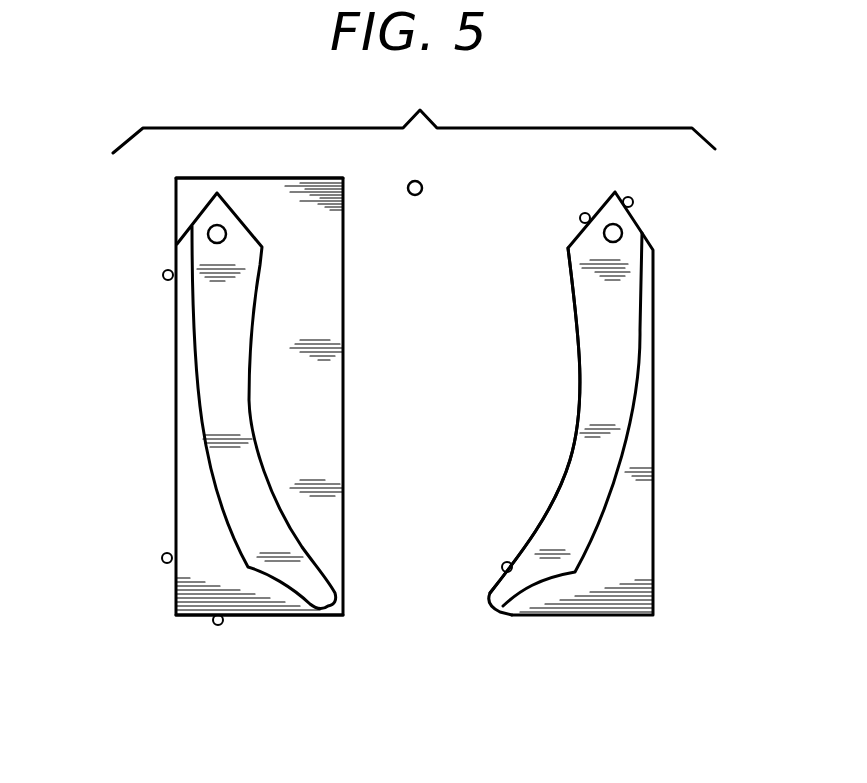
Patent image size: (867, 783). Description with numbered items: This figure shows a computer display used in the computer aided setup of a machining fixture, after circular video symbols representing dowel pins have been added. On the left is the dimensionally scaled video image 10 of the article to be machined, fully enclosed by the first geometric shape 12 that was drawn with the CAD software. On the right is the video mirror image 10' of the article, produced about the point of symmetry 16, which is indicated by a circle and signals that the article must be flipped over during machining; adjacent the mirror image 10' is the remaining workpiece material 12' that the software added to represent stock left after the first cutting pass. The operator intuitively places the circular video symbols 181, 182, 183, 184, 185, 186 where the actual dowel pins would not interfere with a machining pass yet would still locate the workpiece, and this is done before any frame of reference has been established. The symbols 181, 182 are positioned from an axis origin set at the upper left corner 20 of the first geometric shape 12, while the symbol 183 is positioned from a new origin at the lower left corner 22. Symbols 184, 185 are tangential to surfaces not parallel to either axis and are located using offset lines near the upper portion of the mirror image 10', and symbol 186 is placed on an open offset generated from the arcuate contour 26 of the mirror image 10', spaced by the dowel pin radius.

The video image 10 is at (256, 401).
The video mirror image 10' is at (565, 403).
The first geometric shape 12 is at (292, 396).
The remaining workpiece material 12' is at (635, 424).
The point of symmetry 16 is at (421, 183).
The circular video symbol 181 is at (163, 275).
The circular video symbol 182 is at (162, 558).
The circular video symbol 183 is at (218, 625).
The circular video symbol 184 is at (580, 219).
The circular video symbol 185 is at (633, 200).
The circular video symbol 186 is at (455, 567).
The upper left corner 20 is at (175, 181).
The lower left corner 22 is at (176, 612).
The arcuate contour 26 is at (553, 493).